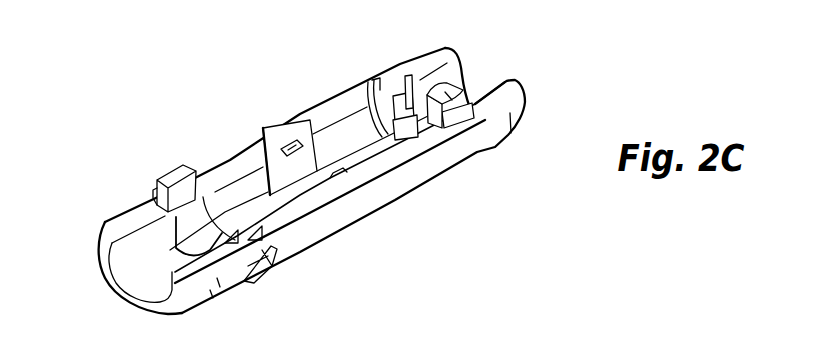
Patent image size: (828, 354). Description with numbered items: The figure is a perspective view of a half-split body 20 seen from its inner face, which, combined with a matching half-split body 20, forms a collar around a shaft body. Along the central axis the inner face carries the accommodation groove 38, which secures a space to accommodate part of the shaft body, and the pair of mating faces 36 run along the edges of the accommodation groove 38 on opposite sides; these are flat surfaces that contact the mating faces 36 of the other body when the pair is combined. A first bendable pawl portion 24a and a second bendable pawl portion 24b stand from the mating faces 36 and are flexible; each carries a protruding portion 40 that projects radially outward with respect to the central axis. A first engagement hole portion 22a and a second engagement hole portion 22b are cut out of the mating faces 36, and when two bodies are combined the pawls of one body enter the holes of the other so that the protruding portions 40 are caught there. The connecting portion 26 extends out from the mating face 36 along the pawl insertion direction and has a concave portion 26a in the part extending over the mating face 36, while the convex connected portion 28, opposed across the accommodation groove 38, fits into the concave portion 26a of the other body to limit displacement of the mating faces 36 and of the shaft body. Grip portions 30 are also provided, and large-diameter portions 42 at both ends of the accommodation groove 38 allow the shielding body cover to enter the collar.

The half-split body 20 is at (326, 274).
The first engagement hole portion 22a is at (257, 273).
The second engagement hole portion 22b is at (387, 108).
The first bendable pawl portion 24a is at (176, 180).
The second bendable pawl portion 24b is at (468, 86).
The connecting portion 26 is at (273, 133).
The concave portion 26a is at (288, 142).
The connected portion 28 is at (340, 175).
The grip portion 30 is at (197, 233).
The mating face 36 is at (403, 58).
The accommodation groove 38 is at (265, 207).
The protruding portion 40 is at (460, 113).
The large-diameter portion 42 is at (143, 273).